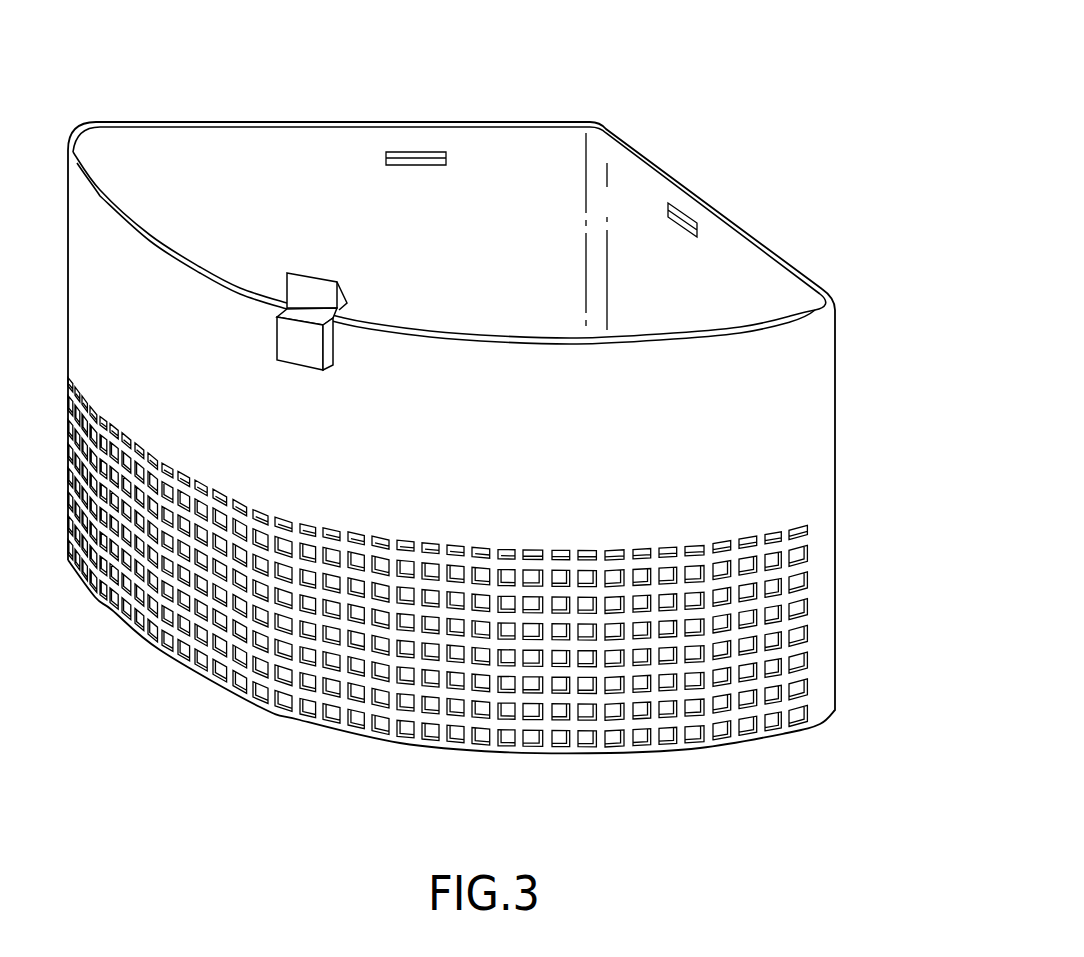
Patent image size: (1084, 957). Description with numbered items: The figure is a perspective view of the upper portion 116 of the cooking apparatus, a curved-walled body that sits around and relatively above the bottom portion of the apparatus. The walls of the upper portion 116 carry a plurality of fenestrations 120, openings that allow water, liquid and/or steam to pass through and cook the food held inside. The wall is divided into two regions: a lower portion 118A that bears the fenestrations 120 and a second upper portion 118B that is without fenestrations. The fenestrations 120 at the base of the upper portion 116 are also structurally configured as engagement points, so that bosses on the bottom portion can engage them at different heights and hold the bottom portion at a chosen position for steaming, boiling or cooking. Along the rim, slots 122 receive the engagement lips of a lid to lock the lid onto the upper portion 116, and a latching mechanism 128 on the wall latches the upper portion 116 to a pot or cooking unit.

The upper portion 116 is at (285, 52).
The lower portion 118A is at (850, 307).
The second upper portion 118B is at (497, 600).
The fenestrations 120 is at (267, 702).
The slots 122 is at (418, 158).
The latching mechanism 128 is at (315, 290).